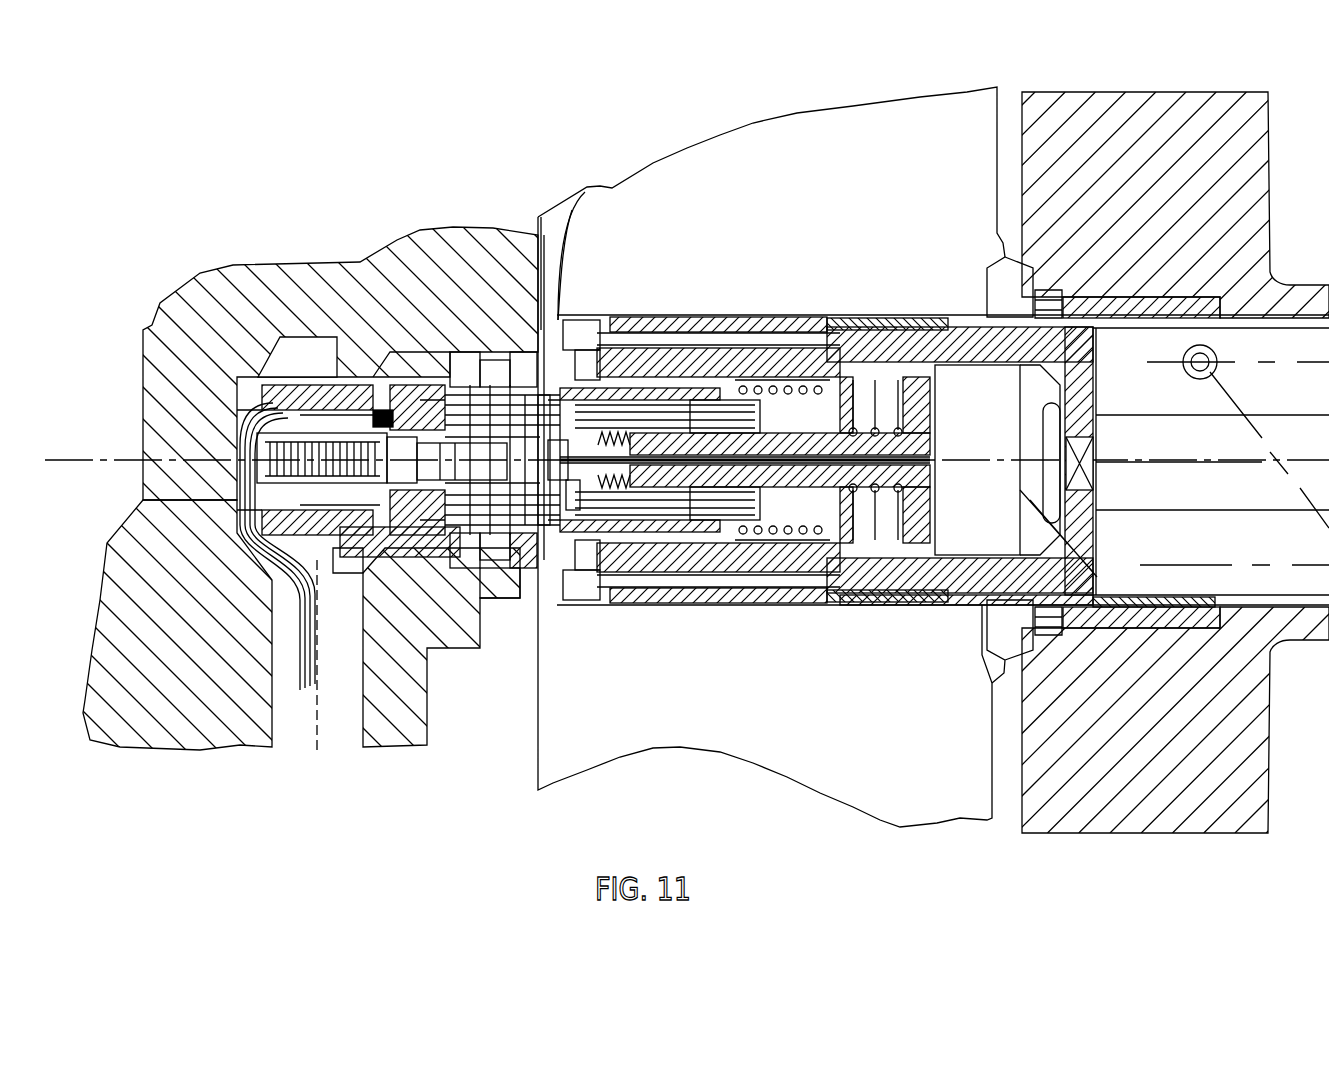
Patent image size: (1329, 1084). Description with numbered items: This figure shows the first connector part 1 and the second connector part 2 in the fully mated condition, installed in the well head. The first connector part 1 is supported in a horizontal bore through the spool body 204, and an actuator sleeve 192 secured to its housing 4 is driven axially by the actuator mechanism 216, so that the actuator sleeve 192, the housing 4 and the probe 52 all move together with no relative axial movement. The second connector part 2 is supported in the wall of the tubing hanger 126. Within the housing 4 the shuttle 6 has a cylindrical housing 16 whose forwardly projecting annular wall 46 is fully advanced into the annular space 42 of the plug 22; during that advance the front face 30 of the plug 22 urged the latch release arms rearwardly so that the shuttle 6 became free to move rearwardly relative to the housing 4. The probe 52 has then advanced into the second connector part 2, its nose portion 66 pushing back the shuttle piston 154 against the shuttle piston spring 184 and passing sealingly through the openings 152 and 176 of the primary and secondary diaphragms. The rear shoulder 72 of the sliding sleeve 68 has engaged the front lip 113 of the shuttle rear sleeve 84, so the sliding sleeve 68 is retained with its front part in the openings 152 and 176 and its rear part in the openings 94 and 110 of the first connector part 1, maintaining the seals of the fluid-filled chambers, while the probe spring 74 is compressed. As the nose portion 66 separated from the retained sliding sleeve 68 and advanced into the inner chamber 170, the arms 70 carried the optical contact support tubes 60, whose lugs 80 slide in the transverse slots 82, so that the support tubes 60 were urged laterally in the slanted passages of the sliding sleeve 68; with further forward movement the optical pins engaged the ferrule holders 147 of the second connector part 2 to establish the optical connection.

The first connector part 1 is at (708, 340).
The second connector part 2 is at (412, 350).
The housing 4 is at (762, 375).
The shuttle 6 is at (620, 360).
The cylindrical housing 16 is at (628, 545).
The plug 22 is at (533, 560).
The front face 30 is at (545, 520).
The annular space 42 is at (485, 380).
The annular wall 46 is at (492, 560).
The probe 52 is at (850, 445).
The optical contact support tubes 60 is at (462, 548).
The nose portion 66 is at (262, 300).
The sliding sleeve 68 is at (500, 395).
The arms 70 is at (437, 437).
The rear shoulder 72 is at (590, 400).
The probe spring 74 is at (640, 395).
The lug 80 is at (790, 578).
The transverse slot 82 is at (668, 540).
The rear sleeve 84 is at (805, 395).
The opening 94 is at (562, 530).
The opening 110 is at (590, 520).
The front lip 113 is at (570, 197).
The tubing hanger 126 is at (145, 518).
The ferrule holder 147 is at (375, 340).
The opening 152 is at (542, 214).
The shuttle piston 154 is at (345, 505).
The inner chamber 170 is at (445, 545).
The opening 176 is at (440, 390).
The shuttle piston spring 184 is at (150, 320).
The actuator sleeve 192 is at (745, 568).
The spool body 204 is at (881, 741).
The actuator mechanism 216 is at (1130, 433).